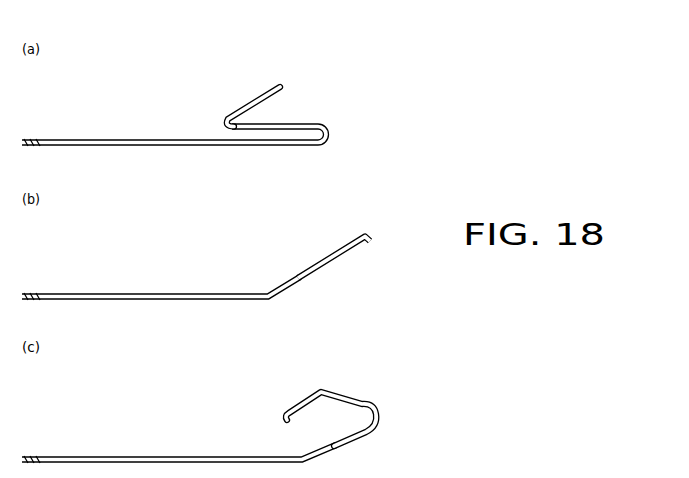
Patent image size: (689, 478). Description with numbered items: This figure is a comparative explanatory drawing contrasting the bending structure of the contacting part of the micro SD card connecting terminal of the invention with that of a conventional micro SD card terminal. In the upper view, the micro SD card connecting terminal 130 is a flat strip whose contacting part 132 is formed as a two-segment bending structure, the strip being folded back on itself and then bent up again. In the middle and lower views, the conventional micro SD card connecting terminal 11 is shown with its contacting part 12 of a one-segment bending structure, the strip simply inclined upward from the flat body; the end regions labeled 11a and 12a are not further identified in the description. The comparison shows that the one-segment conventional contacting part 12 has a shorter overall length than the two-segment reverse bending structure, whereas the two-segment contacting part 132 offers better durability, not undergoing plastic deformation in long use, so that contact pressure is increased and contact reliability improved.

The micro SD card connecting terminal 130 is at (176, 139).
The contacting part 132 is at (257, 87).
The conventional micro SD card connecting terminal 11 is at (176, 291).
The inclined end portion 11a is at (349, 243).
The contacting part 12 is at (176, 452).
The hooked end portion 12a is at (316, 384).